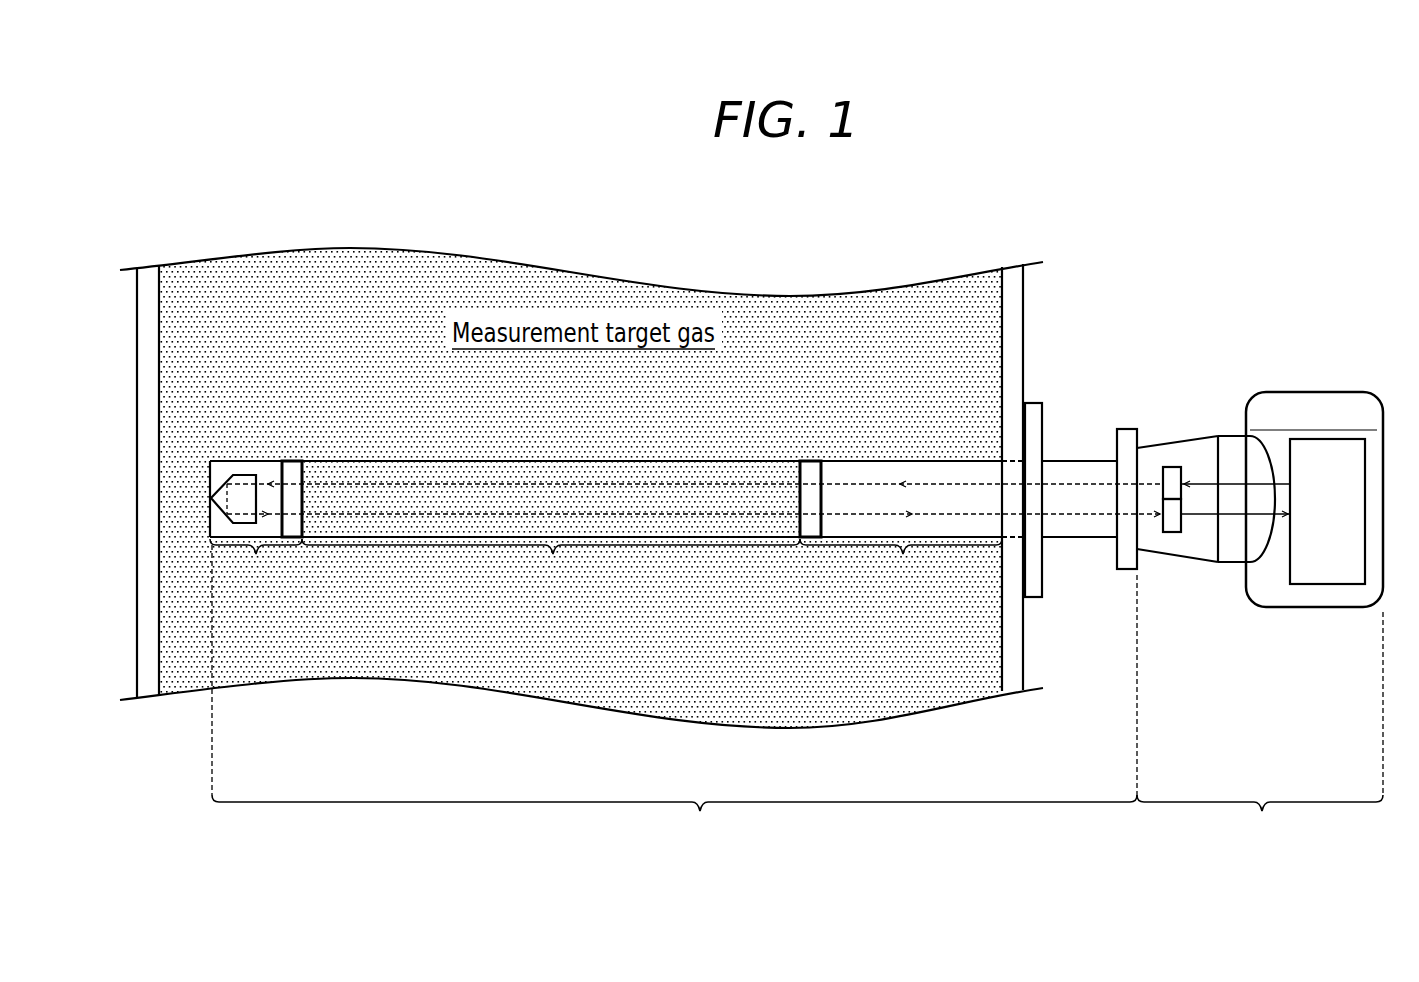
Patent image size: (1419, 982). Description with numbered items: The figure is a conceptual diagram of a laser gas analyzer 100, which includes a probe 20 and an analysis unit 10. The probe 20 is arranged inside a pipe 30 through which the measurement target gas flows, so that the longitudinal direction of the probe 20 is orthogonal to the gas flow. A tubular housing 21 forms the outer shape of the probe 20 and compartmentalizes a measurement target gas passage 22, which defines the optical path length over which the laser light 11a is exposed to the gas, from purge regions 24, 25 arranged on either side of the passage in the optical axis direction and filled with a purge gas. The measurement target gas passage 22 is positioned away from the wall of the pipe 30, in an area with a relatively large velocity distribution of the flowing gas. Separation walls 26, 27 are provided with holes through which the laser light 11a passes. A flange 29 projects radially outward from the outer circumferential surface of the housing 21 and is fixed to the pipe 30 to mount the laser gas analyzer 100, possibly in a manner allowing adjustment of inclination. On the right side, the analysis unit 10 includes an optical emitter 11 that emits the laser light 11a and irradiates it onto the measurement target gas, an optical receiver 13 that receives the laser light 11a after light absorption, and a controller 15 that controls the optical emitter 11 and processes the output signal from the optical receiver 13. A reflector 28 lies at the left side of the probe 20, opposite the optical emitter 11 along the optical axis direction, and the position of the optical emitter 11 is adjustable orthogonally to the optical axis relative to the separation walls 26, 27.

The laser gas analyzer 100 is at (1282, 167).
The analysis unit 10 is at (1260, 615).
The optical emitter 11 is at (1168, 466).
The laser light 11a is at (725, 484).
The optical receiver 13 is at (1172, 533).
The controller 15 is at (1328, 585).
The probe 20 is at (674, 691).
The housing 21 is at (578, 461).
The measurement target gas passage 22 is at (551, 560).
The purge region 24 is at (901, 561).
The purge region 25 is at (256, 521).
The separation wall 26 is at (810, 470).
The separation wall 27 is at (291, 468).
The reflector 28 is at (245, 471).
The flange 29 is at (1037, 427).
The pipe 30 is at (1025, 343).